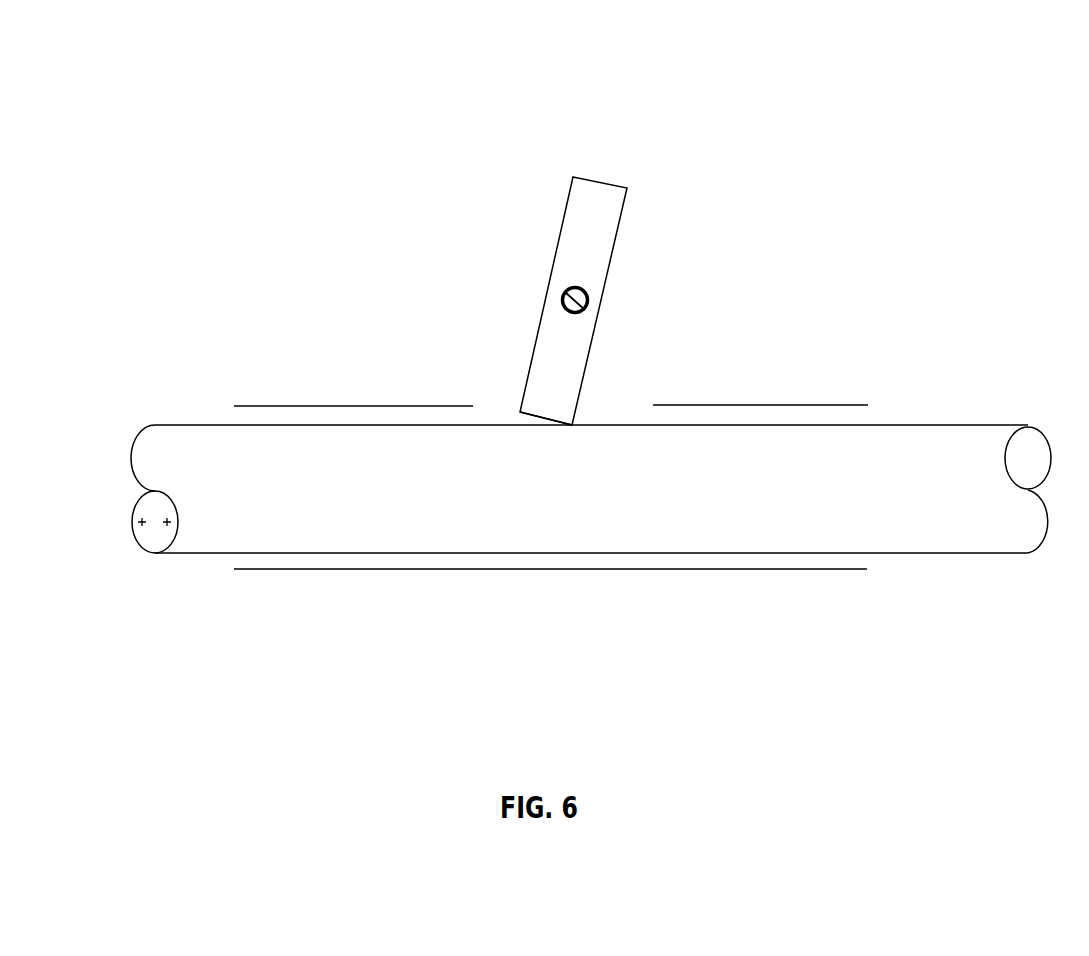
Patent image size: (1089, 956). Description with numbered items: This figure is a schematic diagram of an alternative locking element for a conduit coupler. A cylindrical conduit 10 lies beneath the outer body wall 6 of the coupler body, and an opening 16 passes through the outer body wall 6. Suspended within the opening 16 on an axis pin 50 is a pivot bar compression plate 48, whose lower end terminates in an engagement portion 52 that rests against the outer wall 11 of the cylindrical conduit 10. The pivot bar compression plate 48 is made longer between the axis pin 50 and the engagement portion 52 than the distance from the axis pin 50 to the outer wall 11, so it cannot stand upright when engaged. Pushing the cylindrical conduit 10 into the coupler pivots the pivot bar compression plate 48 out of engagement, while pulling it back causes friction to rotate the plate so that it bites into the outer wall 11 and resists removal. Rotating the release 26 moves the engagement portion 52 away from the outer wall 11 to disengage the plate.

The outer body wall 6 is at (723, 405).
The cylindrical conduit 10 is at (591, 388).
The outer wall 11 is at (852, 457).
The opening 16 is at (623, 410).
The release 26 is at (598, 203).
The pivot bar compression plate 48 is at (540, 246).
The axis pin 50 is at (562, 298).
The engagement portion 52 is at (542, 410).